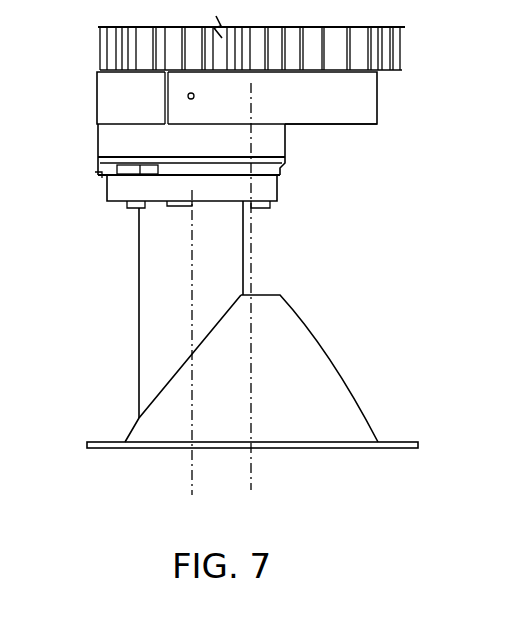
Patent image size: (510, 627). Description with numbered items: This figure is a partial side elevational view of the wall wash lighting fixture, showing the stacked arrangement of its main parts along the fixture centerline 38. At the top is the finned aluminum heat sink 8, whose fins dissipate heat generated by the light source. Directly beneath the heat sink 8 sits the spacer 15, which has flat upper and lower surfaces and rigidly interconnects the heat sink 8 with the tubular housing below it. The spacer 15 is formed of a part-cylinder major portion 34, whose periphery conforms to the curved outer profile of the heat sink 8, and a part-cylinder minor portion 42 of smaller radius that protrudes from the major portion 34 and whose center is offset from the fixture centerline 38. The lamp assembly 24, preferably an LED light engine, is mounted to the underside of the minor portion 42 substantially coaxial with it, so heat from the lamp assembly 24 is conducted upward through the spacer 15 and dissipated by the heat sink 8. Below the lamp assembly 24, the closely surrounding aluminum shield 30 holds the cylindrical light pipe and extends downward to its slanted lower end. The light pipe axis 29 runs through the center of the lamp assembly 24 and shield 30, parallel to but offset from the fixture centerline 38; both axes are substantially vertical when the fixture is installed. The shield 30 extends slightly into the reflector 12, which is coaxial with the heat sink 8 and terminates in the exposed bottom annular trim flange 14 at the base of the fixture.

The finned aluminum heat sink 8 is at (103, 48).
The part-cylinder minor portion 42 is at (92, 95).
The part-cylinder major portion 34 is at (366, 103).
The spacer 15 is at (322, 113).
The lamp assembly 24 is at (96, 144).
The shield 30 is at (148, 310).
The reflector 12 is at (313, 352).
The bottom annular trim flange 14 is at (108, 445).
The light pipe axis 29 is at (190, 483).
The fixture centerline 38 is at (251, 478).